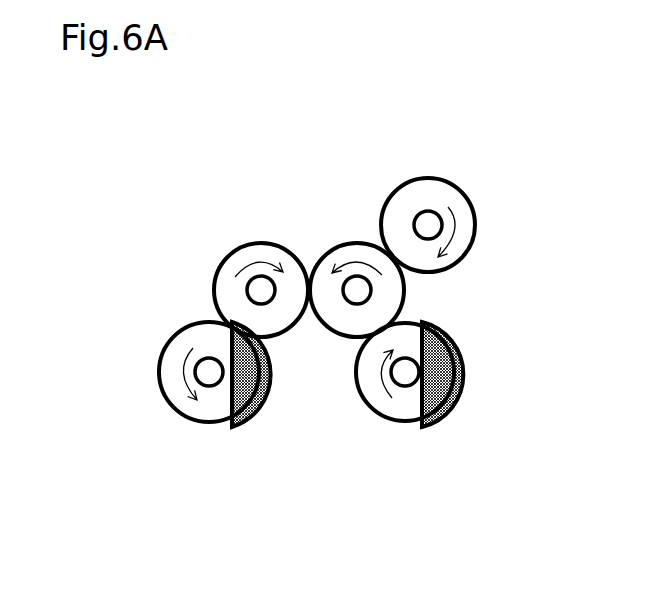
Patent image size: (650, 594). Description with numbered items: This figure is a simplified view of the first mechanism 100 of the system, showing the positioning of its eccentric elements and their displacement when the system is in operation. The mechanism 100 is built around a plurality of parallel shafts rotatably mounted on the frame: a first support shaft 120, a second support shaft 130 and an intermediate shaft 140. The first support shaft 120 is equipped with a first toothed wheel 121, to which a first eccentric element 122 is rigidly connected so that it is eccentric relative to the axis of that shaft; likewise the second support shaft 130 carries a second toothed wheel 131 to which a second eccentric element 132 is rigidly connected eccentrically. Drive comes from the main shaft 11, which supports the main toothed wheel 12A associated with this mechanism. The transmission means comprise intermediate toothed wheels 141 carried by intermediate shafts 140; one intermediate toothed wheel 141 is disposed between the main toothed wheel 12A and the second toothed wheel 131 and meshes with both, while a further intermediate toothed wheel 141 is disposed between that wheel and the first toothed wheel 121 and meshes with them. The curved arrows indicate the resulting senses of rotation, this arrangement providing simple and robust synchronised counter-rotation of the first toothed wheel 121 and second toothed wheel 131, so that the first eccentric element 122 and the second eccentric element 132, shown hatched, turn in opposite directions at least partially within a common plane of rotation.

The mechanism 100 is at (175, 283).
The intermediate shaft 140 is at (243, 229).
The intermediate toothed wheel 141 is at (296, 283).
The main shaft 11 is at (406, 196).
The main toothed wheel 12A is at (405, 213).
The first support shaft 120 is at (182, 421).
The first toothed wheel 121 is at (185, 412).
The first eccentric element 122 is at (248, 395).
The second support shaft 130 is at (384, 421).
The second toothed wheel 131 is at (372, 413).
The second eccentric element 132 is at (438, 405).